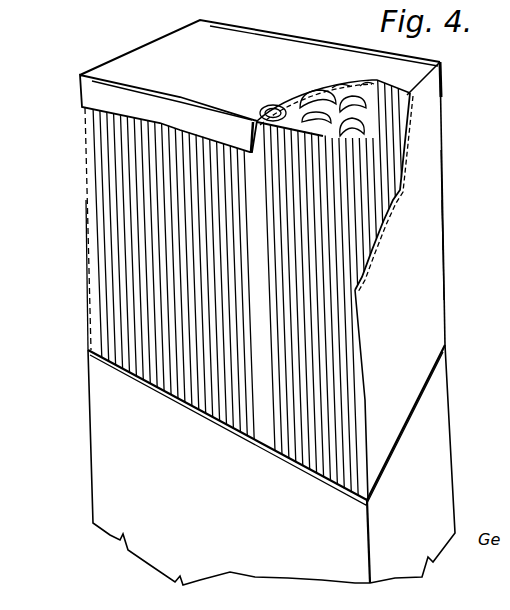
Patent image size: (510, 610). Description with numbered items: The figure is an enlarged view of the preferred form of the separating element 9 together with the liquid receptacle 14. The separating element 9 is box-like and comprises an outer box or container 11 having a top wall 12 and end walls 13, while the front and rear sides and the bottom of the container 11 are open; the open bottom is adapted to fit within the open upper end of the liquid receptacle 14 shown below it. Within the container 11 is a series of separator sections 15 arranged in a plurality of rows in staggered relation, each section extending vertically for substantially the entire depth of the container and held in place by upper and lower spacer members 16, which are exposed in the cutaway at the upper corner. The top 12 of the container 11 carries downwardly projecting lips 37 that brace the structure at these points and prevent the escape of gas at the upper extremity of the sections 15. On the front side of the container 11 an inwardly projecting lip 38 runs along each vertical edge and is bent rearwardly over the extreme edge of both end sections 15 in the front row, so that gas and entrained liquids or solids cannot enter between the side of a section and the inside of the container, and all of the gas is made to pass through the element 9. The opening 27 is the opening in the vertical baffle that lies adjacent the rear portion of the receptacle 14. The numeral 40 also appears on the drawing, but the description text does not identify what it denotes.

The separating element 9 is at (453, 196).
The outer box or container 11 is at (422, 273).
The top wall 12 is at (280, 53).
The end walls 13 is at (425, 143).
The liquid receptacle 14 is at (100, 433).
The separator sections 15 is at (107, 278).
The spacer members 16 is at (295, 110).
The opening 27 is at (452, 363).
The downwardly projecting lips 37 is at (95, 92).
The inwardly projecting lip 38 is at (97, 201).
The element 40 is at (96, 4).